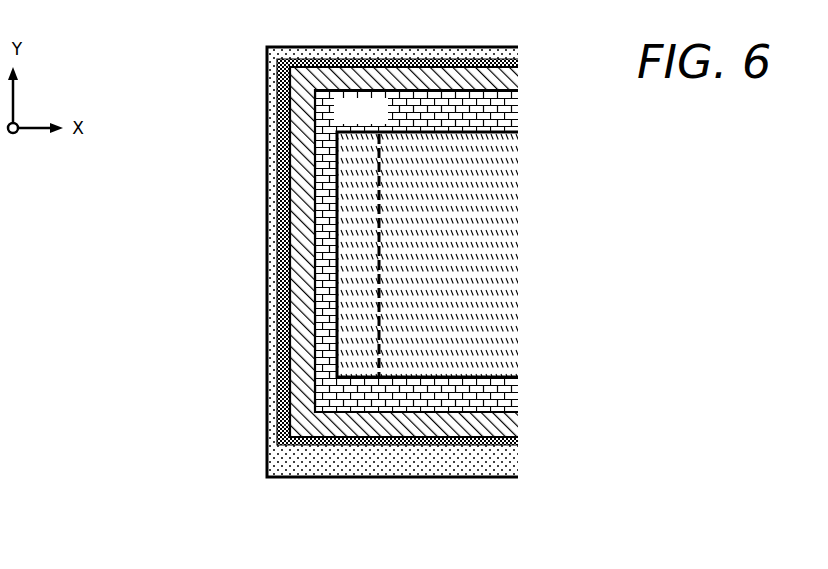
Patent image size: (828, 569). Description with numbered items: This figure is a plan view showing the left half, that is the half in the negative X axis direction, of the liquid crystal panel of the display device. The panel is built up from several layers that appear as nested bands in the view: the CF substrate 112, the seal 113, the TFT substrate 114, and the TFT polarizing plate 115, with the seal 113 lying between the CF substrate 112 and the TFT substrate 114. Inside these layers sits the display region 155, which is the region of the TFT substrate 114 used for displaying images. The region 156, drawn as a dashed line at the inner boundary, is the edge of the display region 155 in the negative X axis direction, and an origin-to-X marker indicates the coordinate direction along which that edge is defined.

The CF substrate 112 is at (517, 427).
The seal 113 is at (333, 56).
The TFT substrate 114 is at (273, 465).
The TFT polarizing plate 115 is at (517, 390).
The display region 155 is at (505, 270).
The region 156 is at (379, 196).